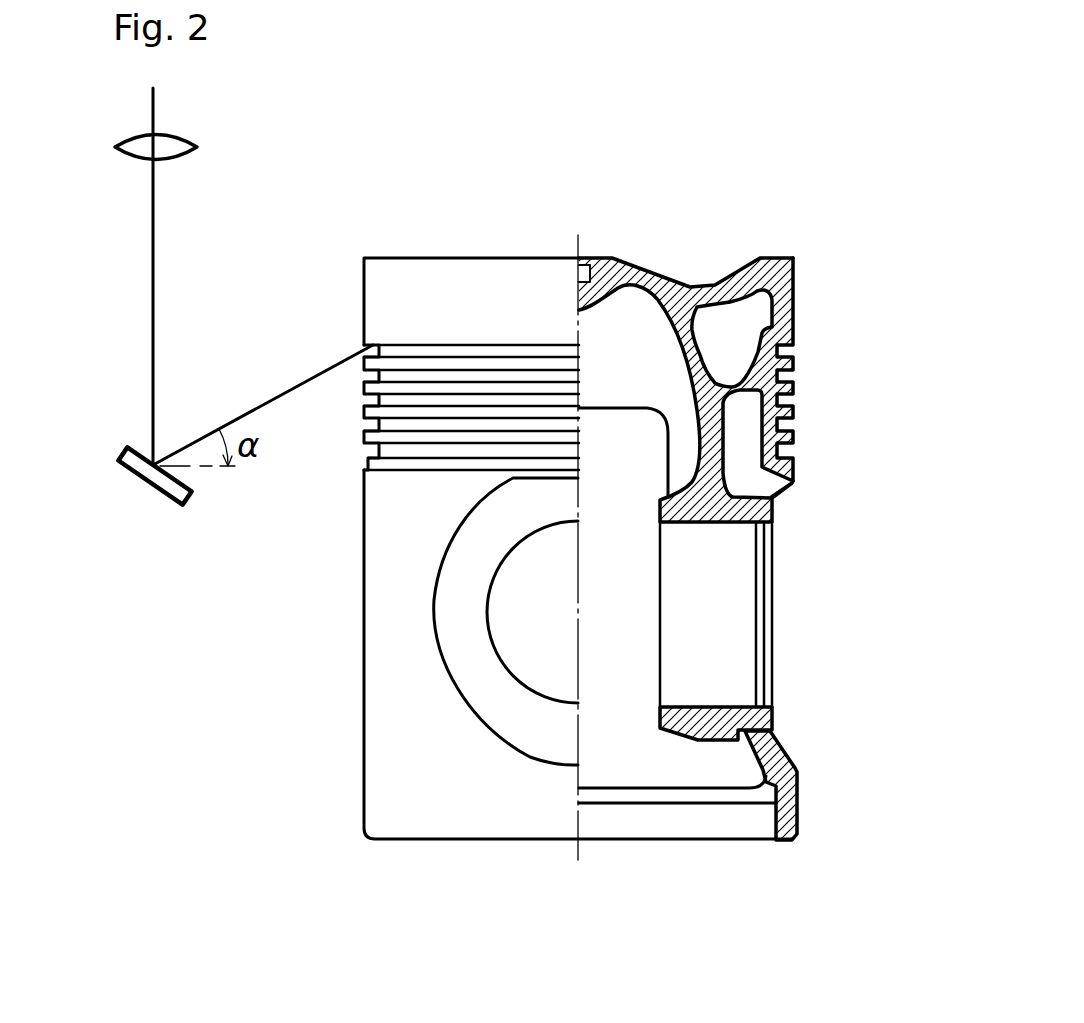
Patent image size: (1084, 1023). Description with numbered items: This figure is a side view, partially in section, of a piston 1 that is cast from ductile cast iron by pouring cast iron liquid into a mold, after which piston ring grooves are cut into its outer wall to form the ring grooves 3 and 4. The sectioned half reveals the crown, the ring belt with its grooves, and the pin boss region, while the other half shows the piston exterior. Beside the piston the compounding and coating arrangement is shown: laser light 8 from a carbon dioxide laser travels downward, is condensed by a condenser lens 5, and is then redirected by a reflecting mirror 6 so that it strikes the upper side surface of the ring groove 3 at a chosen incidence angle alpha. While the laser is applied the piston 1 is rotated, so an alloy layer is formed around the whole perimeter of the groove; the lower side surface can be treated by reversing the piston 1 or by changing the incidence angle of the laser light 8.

The piston 1 is at (605, 435).
The ring groove 3 is at (792, 350).
The ring groove 4 is at (353, 452).
The condenser lens 5 is at (188, 138).
The reflecting mirror 6 is at (150, 483).
The laser light 8 is at (155, 293).